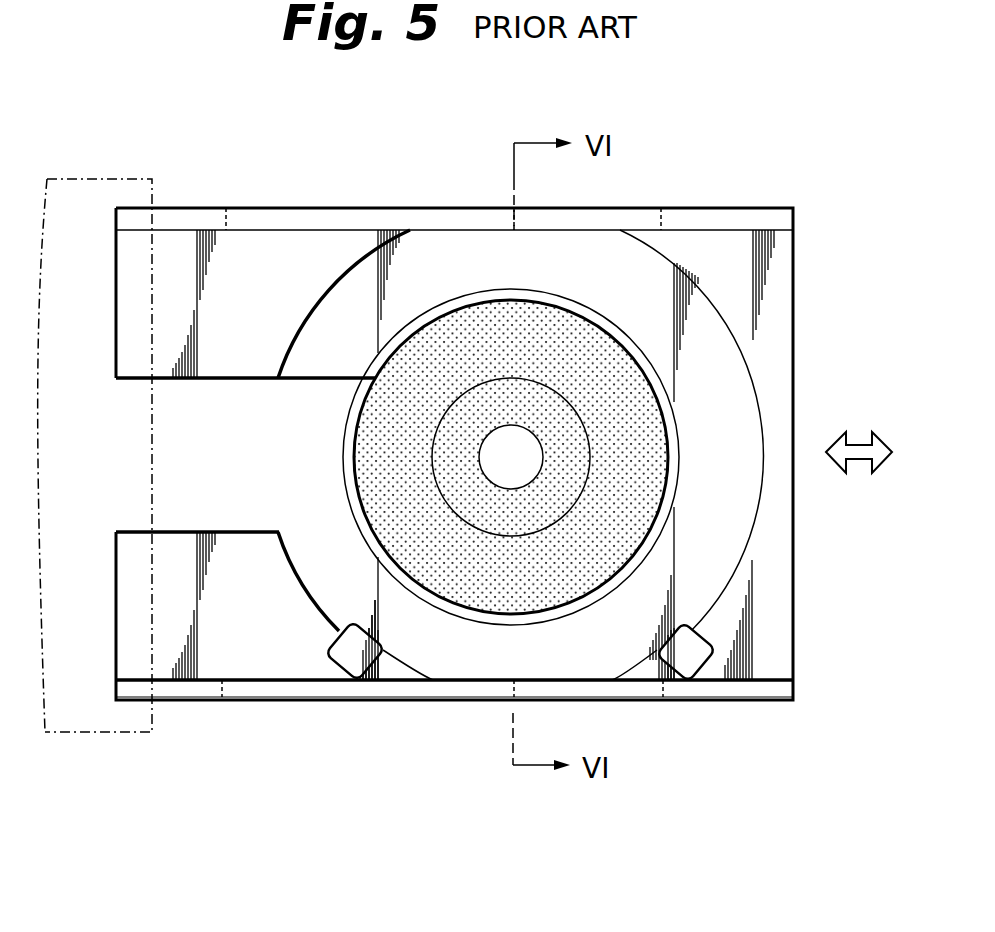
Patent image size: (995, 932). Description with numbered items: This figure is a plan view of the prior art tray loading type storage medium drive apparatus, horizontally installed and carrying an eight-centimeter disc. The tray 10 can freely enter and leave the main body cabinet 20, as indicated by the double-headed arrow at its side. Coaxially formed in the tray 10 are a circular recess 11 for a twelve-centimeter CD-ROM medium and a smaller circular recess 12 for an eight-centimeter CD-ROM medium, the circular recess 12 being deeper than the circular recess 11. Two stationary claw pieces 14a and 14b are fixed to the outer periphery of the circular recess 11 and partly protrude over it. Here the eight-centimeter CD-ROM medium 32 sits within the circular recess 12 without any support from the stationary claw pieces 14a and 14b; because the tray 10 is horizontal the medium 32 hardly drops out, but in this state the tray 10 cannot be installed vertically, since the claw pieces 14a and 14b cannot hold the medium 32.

The tray 10 is at (770, 252).
The circular recess 11 is at (712, 363).
The circular recess 12 is at (672, 505).
The stationary claw piece 14a is at (363, 673).
The stationary claw piece 14b is at (697, 662).
The main body cabinet 20 is at (97, 179).
The 8-cm CD-ROM medium 32 is at (607, 550).